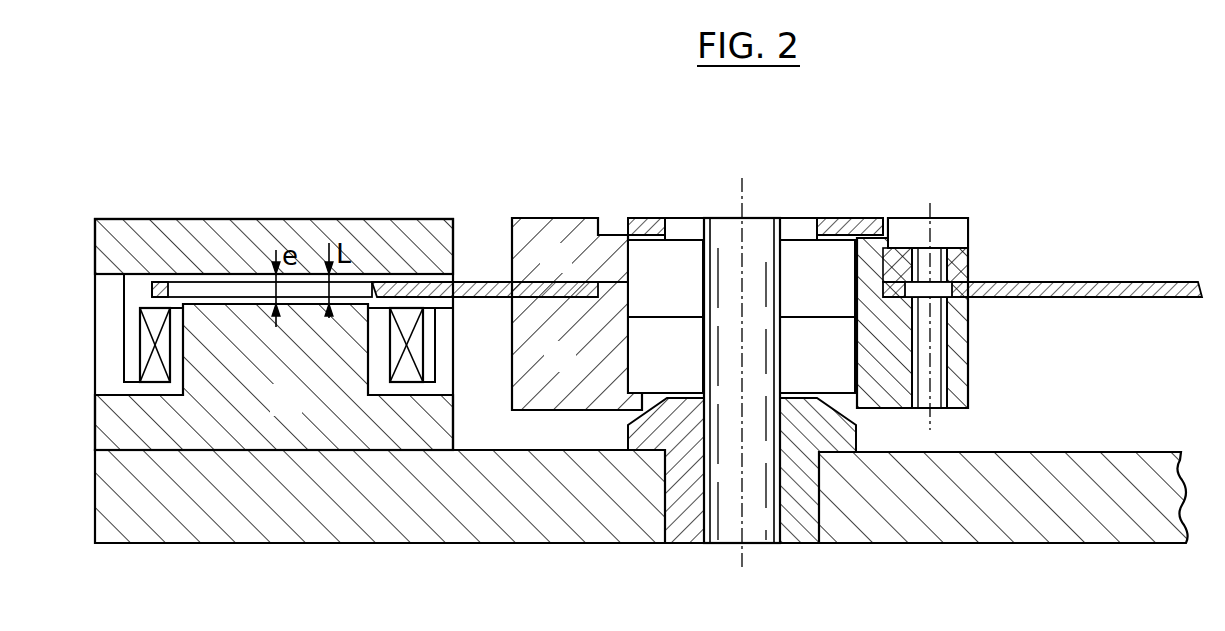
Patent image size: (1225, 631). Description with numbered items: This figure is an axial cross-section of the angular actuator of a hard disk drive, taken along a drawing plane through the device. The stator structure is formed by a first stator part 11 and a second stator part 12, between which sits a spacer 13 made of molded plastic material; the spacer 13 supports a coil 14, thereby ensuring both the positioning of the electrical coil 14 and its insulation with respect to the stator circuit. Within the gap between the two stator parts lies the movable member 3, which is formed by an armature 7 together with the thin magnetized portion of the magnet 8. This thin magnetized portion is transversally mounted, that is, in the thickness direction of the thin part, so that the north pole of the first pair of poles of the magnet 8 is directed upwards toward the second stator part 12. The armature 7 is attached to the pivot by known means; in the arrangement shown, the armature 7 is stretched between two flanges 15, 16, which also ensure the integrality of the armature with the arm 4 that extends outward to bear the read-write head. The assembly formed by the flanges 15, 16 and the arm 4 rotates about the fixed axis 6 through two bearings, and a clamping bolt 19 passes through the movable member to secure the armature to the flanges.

The movable member 3 is at (579, 162).
The arm 4 is at (1043, 283).
The axial pivot 6 is at (730, 512).
The armature 7 is at (165, 281).
The magnet 8 is at (237, 287).
The first stator part 11 is at (297, 412).
The second stator part 12 is at (420, 232).
The spacer 13 is at (110, 292).
The coil 14 is at (147, 350).
The flange 15 is at (571, 369).
The flange 16 is at (569, 269).
The clamping bolt 19 is at (907, 232).